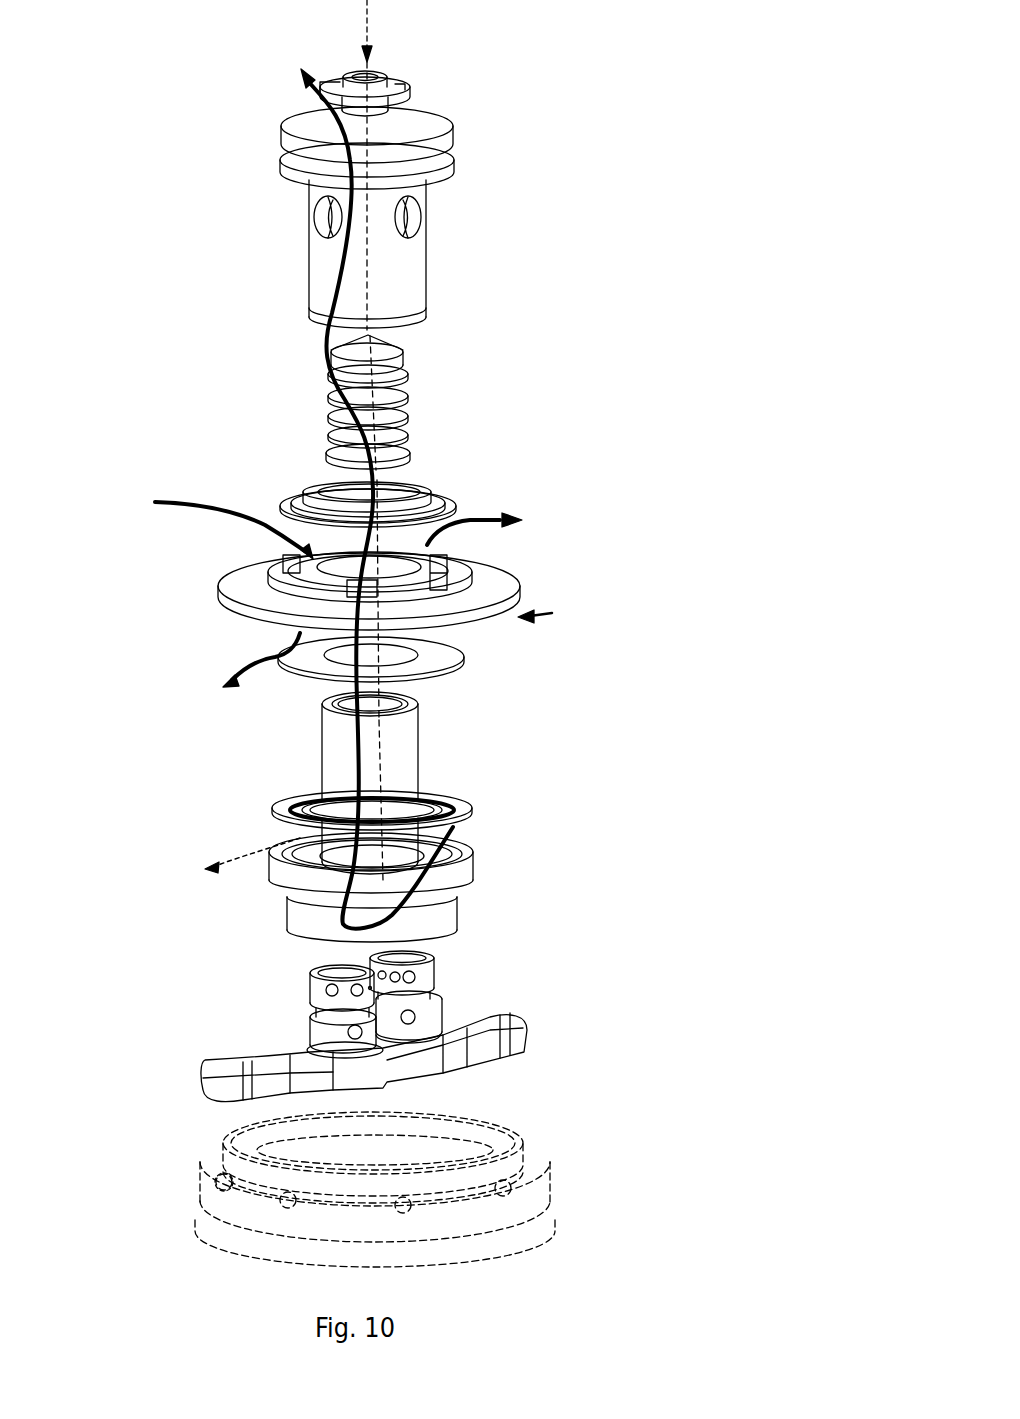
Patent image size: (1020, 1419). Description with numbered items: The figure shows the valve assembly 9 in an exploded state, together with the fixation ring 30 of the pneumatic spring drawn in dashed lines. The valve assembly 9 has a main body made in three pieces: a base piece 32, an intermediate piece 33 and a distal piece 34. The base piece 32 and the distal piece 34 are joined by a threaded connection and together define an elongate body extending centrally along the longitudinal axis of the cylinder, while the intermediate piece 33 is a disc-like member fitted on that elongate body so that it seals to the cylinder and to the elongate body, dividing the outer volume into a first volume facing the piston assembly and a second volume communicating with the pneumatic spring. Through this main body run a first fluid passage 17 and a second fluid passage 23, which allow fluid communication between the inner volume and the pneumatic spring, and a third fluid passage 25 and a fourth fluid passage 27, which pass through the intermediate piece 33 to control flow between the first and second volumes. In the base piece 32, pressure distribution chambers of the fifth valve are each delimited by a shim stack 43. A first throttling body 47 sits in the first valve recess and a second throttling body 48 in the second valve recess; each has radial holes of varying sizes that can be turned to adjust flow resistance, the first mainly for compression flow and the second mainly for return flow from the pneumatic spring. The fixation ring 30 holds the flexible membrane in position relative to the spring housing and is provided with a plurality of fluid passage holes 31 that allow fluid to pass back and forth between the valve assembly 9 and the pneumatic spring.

The valve assembly 9 is at (616, 332).
The first fluid passage 17 is at (370, 300).
The second fluid passage 23 is at (330, 327).
The third fluid passage 25 is at (200, 508).
The fourth fluid passage 27 is at (492, 515).
The fixation ring 30 is at (556, 1127).
The fluid passage holes 31 is at (230, 1180).
The base piece 32 is at (407, 752).
The intermediate piece 33 is at (488, 583).
The distal piece 34 is at (428, 257).
The shim stack 43 is at (462, 807).
The first throttling body 47 is at (311, 978).
The second throttling body 48 is at (435, 975).